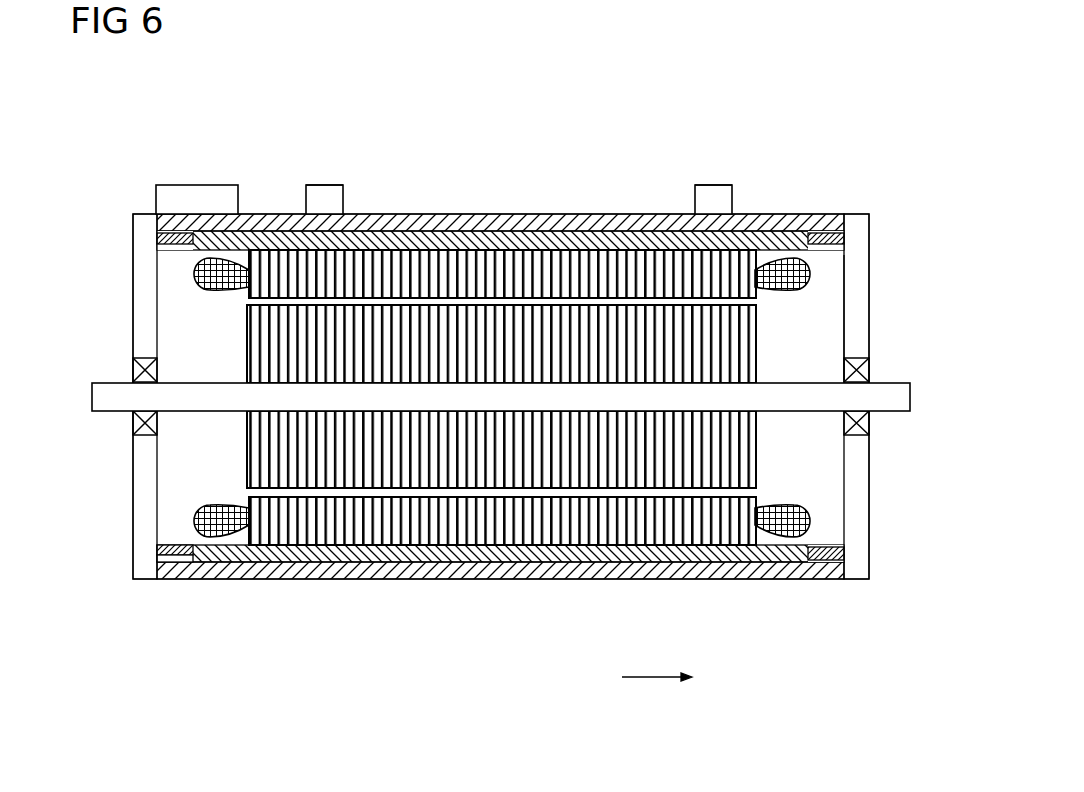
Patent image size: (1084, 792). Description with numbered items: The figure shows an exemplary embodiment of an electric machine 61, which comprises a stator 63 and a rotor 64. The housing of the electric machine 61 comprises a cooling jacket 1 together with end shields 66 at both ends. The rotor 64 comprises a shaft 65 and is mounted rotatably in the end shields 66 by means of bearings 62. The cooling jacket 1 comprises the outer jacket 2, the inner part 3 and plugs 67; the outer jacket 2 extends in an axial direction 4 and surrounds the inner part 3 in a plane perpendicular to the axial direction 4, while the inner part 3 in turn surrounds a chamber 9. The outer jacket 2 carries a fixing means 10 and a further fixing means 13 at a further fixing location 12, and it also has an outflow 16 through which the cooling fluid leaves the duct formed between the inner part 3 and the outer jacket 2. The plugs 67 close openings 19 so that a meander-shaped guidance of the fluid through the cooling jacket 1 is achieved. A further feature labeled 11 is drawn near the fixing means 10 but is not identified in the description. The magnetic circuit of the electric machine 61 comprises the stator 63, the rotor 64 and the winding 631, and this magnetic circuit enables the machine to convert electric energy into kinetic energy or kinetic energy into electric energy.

The cooling jacket 1 is at (556, 160).
The outer jacket 2 is at (470, 571).
The inner part 3 is at (386, 550).
The axial direction 4 is at (654, 680).
The chamber 9 is at (820, 299).
The fixing means 10 is at (314, 186).
The first connection line 11 is at (345, 160).
The further fixing location 12 is at (739, 158).
The further fixing means 13 is at (707, 186).
The outflow 16 is at (221, 186).
The openings 19 is at (176, 557).
The electric machine 61 is at (844, 82).
The bearings 62 is at (140, 372).
The stator 63 is at (702, 527).
The rotor 64 is at (750, 450).
The shaft 65 is at (893, 382).
The end shields 66 is at (145, 312).
The plugs 67 is at (176, 186).
The winding 631 is at (185, 272).